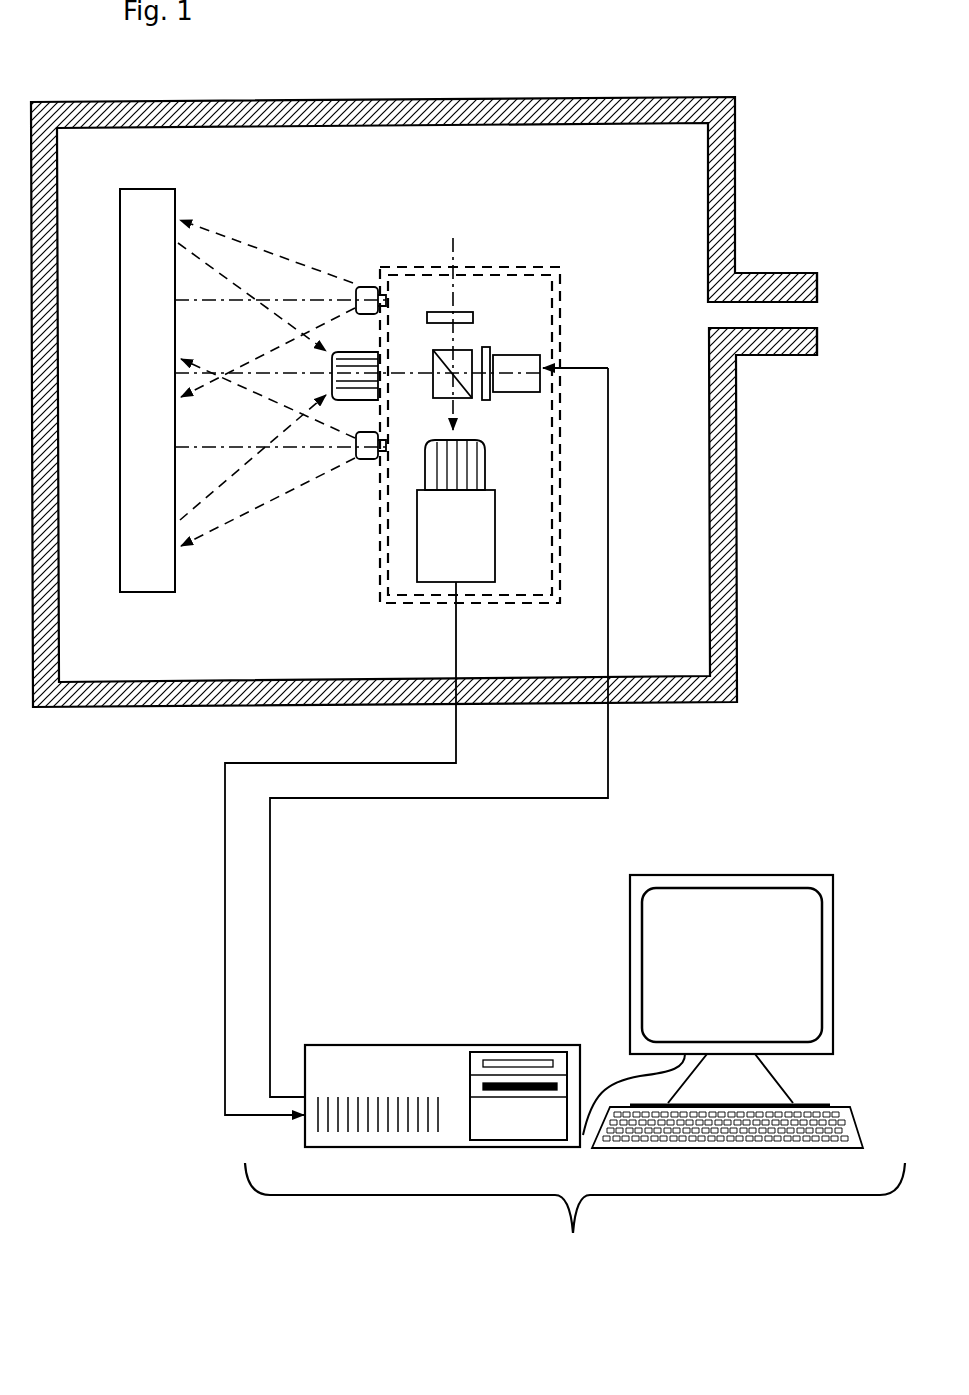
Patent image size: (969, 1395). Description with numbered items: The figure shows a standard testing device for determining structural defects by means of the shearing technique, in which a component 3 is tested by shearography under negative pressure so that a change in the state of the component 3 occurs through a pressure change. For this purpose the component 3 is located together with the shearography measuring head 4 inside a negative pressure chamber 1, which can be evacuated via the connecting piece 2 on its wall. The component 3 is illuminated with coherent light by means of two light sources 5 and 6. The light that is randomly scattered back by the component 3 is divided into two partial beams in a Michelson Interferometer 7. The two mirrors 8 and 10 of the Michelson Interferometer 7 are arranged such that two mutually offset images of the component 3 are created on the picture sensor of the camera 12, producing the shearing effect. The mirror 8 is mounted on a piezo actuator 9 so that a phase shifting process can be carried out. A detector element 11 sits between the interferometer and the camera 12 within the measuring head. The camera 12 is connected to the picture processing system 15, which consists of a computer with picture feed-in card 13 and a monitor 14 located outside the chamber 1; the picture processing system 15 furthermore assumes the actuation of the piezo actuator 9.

The negative pressure chamber 1 is at (718, 203).
The connecting piece 2 is at (791, 273).
The component 3 is at (150, 230).
The shearography measuring head 4 is at (553, 270).
The light source 5 is at (370, 288).
The light source 6 is at (372, 462).
The Michelson Interferometer 7 is at (428, 347).
The mirror 8 is at (487, 355).
The piezo actuator 9 is at (528, 370).
The mirror 10 is at (458, 316).
The detector / sensor 11 is at (434, 468).
The camera 12 is at (442, 558).
The computer with picture feed-in card 13 is at (425, 1070).
The monitor 14 is at (677, 955).
The picture processing system 15 is at (575, 1203).